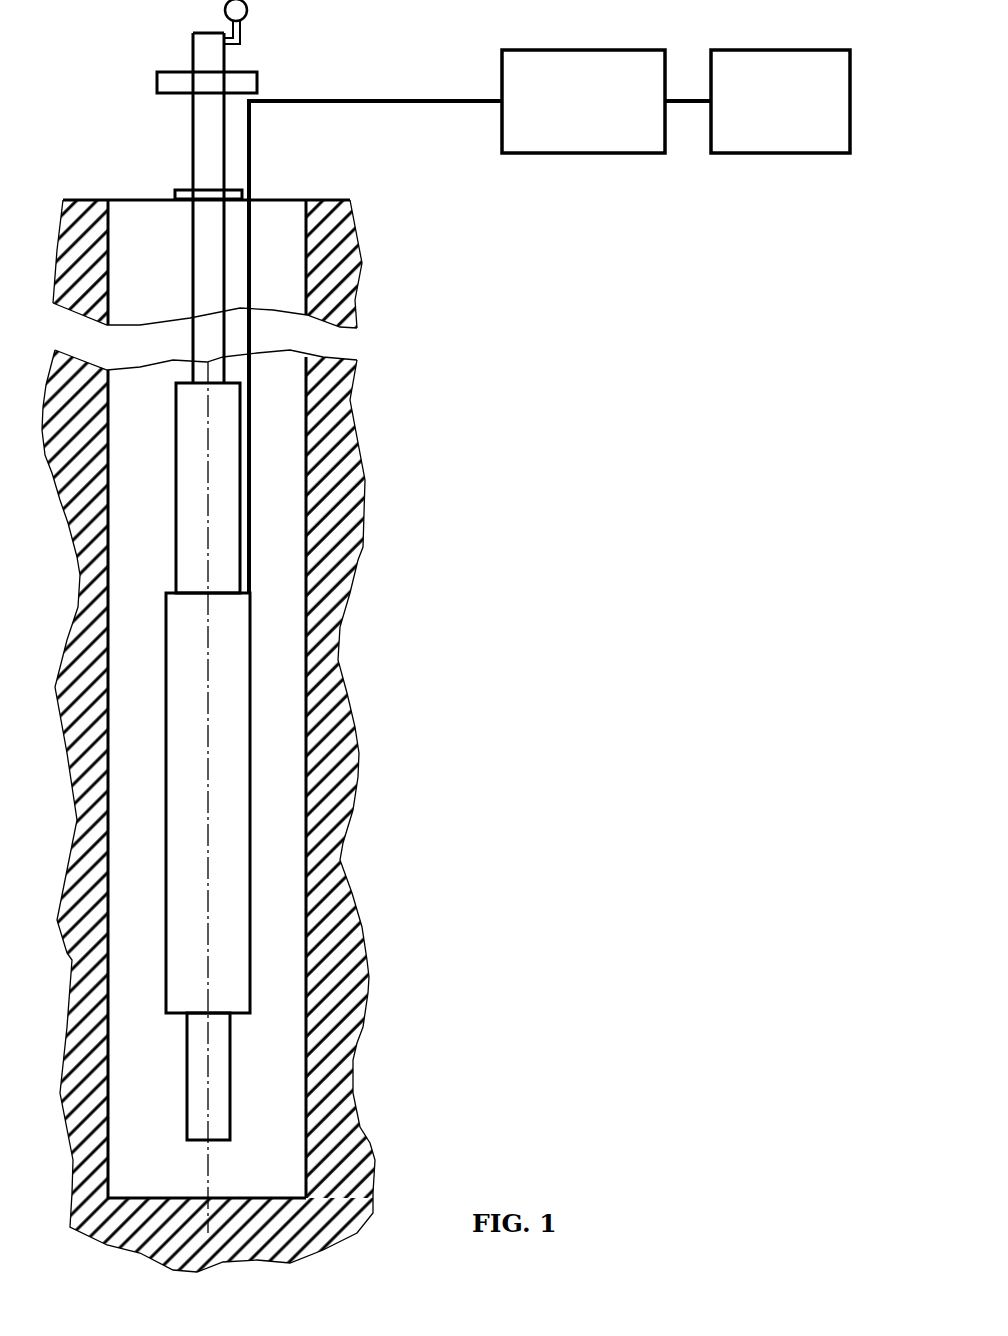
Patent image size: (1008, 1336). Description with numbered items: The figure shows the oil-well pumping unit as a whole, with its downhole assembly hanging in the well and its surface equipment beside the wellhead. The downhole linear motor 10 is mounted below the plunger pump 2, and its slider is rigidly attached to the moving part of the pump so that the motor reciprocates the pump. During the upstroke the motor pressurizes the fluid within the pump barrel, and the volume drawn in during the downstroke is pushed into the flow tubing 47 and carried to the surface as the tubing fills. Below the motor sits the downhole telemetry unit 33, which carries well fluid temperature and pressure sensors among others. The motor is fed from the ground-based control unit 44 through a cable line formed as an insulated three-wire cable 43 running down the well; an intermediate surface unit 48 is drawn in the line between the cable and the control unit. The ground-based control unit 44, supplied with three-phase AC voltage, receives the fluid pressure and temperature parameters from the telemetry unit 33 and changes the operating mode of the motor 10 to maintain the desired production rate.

The flow tubing 47 is at (340, 208).
The insulated three-wire cable 43 is at (375, 347).
The plunger pump 2 is at (314, 488).
The downhole linear motor 10 is at (316, 803).
The downhole telemetry unit 33 is at (328, 1044).
The surface unit 48 is at (606, 183).
The ground-based control unit 44 is at (795, 183).